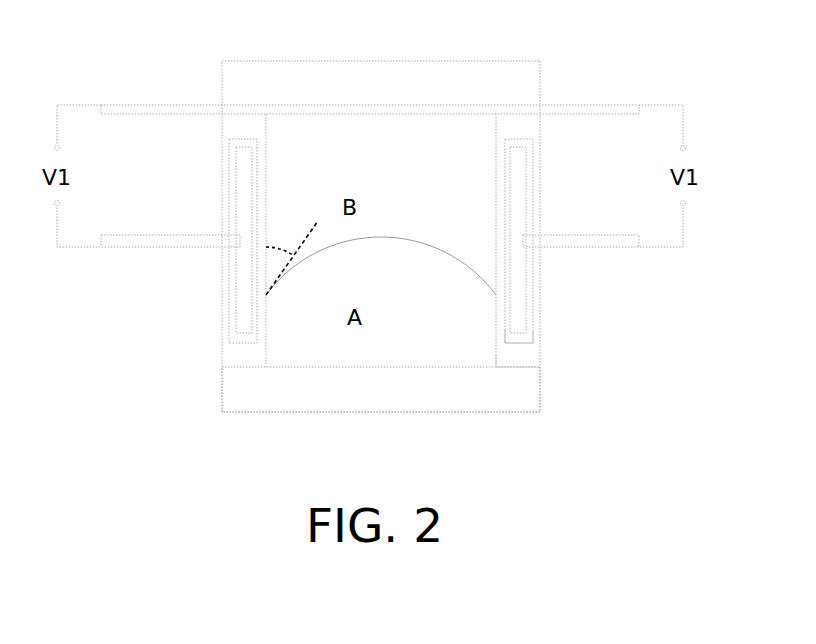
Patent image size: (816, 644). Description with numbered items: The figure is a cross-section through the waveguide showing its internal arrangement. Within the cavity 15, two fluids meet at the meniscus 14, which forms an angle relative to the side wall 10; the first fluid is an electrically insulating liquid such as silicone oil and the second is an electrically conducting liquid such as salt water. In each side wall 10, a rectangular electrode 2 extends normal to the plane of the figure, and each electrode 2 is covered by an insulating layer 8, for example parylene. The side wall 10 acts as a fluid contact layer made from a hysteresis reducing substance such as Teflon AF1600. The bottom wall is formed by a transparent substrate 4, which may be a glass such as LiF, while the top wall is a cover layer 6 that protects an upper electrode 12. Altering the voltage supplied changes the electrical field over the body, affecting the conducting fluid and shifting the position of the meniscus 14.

The rectangular electrode 2 is at (519, 174).
The transparent substrate 4 is at (228, 395).
The cover layer 6 is at (311, 73).
The insulating layer 8 is at (527, 338).
The side wall 10 is at (528, 350).
The upper electrode 12 is at (606, 110).
The meniscus 14 is at (402, 238).
The cavity 15 is at (430, 123).